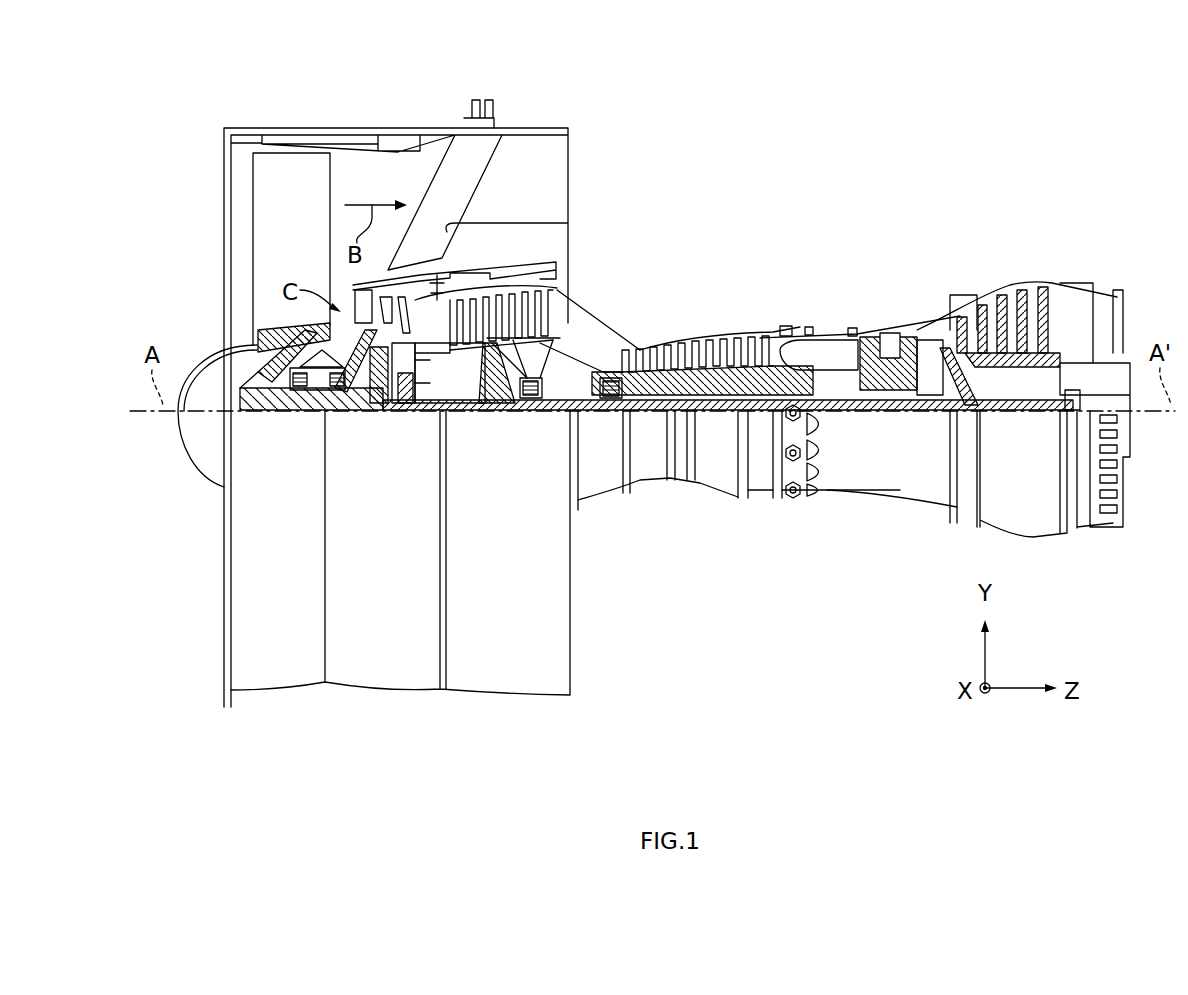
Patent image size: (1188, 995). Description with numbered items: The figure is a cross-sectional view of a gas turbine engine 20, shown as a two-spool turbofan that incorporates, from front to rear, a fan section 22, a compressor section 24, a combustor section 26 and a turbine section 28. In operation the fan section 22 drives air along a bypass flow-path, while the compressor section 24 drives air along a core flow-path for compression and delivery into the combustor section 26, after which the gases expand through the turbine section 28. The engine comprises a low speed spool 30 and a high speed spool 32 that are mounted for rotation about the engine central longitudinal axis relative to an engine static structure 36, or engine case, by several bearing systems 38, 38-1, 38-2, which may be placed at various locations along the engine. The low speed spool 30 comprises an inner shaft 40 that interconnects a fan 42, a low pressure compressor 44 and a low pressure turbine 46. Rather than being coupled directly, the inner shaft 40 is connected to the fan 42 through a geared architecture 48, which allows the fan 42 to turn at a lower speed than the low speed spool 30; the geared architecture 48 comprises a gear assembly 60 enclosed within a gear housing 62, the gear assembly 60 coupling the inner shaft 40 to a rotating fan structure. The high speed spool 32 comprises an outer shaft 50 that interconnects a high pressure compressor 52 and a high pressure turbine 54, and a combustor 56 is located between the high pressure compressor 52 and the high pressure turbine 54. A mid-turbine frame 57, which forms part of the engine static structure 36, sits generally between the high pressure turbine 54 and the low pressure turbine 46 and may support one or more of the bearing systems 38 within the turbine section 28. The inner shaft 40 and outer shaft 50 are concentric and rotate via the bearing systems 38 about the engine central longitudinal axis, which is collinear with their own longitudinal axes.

The gas turbine engine 20 is at (872, 121).
The fan section 22 is at (418, 112).
The compressor section 24 is at (443, 230).
The combustor section 26 is at (873, 230).
The turbine section 28 is at (1068, 230).
The low speed spool 30 is at (722, 424).
The high speed spool 32 is at (765, 378).
The engine static structure 36 is at (760, 477).
The bearing system 38 is at (940, 395).
The bearing system 38-1 is at (303, 388).
The bearing system 38-2 is at (530, 395).
The inner shaft 40 is at (594, 412).
The fan 42 is at (293, 255).
The low pressure compressor 44 is at (477, 313).
The low pressure turbine 46 is at (1010, 312).
The geared architecture 48 is at (399, 447).
The outer shaft 50 is at (812, 392).
The high pressure compressor 52 is at (740, 375).
The high pressure turbine 54 is at (890, 348).
The combustor 56 is at (815, 345).
The mid-turbine frame 57 is at (928, 355).
The gear assembly 60 is at (430, 383).
The gear housing 62 is at (430, 359).